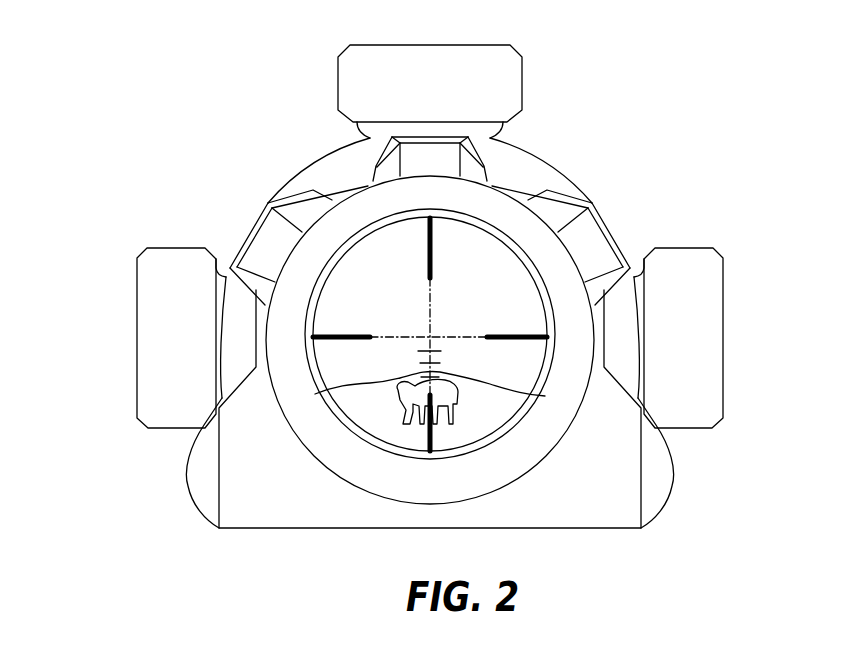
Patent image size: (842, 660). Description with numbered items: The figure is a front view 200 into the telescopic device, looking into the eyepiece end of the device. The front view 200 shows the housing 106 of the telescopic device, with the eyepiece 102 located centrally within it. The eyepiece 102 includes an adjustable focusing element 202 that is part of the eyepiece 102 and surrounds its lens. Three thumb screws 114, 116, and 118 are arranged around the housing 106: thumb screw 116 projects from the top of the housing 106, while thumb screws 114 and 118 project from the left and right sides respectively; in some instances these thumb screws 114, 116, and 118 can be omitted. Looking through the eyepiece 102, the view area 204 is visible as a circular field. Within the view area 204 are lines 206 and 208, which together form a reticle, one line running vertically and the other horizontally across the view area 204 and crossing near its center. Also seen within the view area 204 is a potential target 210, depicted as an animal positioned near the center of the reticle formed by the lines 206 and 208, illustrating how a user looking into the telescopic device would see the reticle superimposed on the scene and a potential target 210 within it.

The front view 200 is at (137, 106).
The thumb screw 116 is at (358, 77).
The thumb screw 114 is at (138, 312).
The thumb screw 118 is at (675, 277).
The housing 106 is at (320, 167).
The eyepiece 102 is at (323, 280).
The adjustable focusing element 202 is at (327, 430).
The view area 204 is at (385, 373).
The line 206 is at (459, 337).
The line 208 is at (440, 350).
The potential target 210 is at (450, 410).